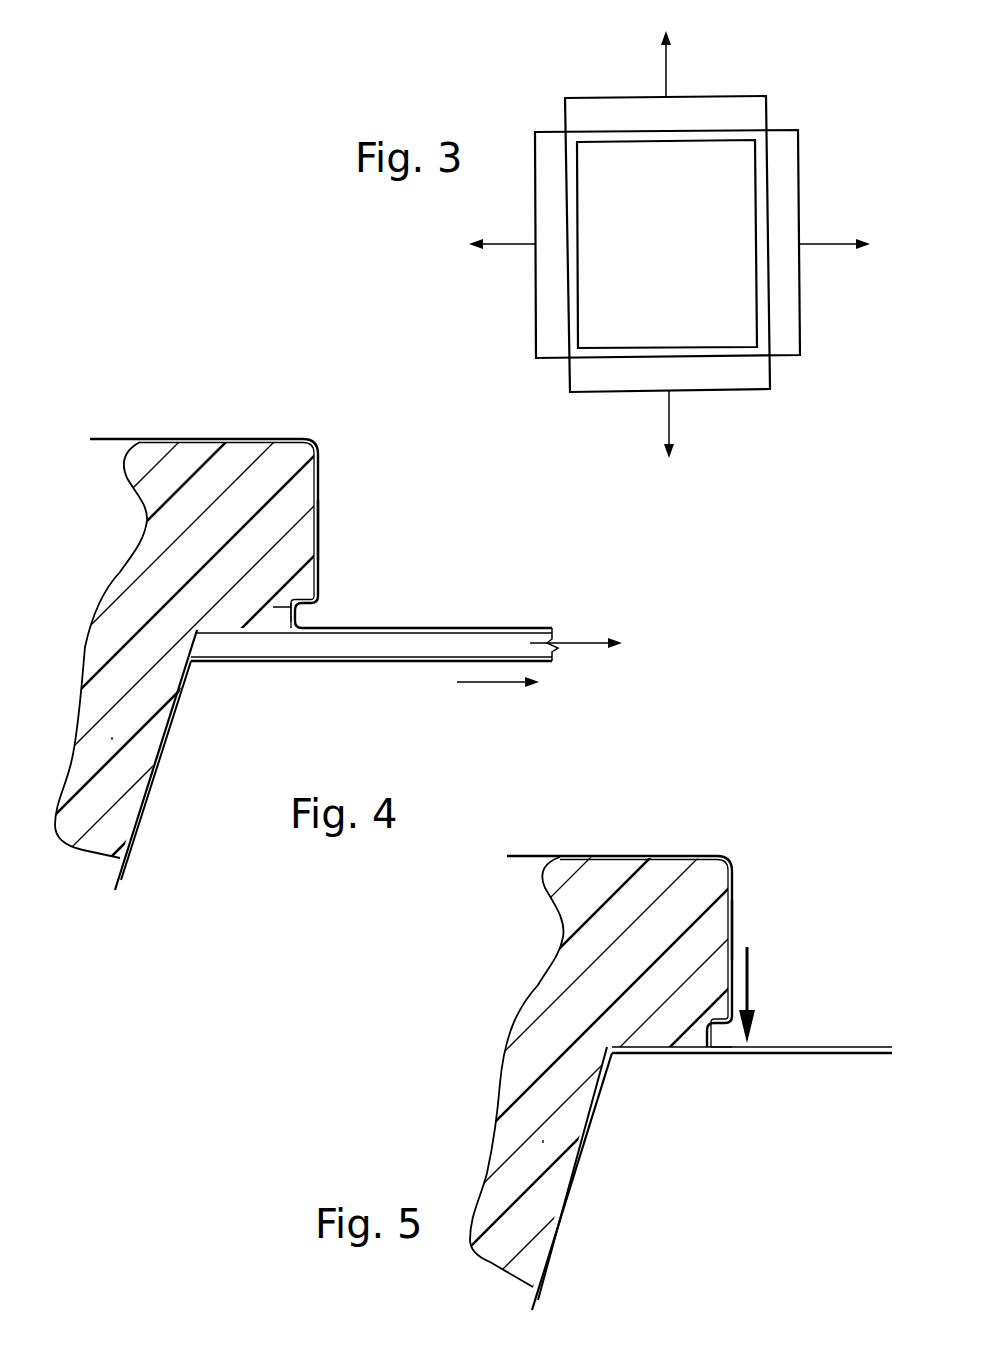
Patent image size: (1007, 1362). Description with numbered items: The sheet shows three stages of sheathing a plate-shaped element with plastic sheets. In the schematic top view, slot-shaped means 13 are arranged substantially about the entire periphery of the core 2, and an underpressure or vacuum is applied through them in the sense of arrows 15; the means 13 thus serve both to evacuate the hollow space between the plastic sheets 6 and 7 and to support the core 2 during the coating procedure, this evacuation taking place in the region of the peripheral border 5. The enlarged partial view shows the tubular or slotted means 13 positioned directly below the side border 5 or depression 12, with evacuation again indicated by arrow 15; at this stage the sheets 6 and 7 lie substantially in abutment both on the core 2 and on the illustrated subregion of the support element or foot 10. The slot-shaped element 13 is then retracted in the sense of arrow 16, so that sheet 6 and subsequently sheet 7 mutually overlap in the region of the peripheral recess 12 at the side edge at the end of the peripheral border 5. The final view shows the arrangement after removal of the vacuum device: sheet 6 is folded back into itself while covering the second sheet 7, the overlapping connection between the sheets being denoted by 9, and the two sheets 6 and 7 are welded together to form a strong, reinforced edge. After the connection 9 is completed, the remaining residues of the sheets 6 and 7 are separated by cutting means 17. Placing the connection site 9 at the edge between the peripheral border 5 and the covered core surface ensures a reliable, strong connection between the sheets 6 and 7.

In FIG. 4, the core 2 is at (170, 487).
In FIG. 5, the core 2 is at (597, 903).
In FIG. 4, the peripheral border 5 is at (319, 525).
In FIG. 5, the peripheral border 5 is at (733, 908).
In FIG. 4, the plastic sheet 6 is at (195, 437).
In FIG. 5, the plastic sheet 6 is at (680, 855).
In FIG. 4, the plastic sheet 7 is at (118, 877).
In FIG. 5, the plastic sheet 7 is at (835, 1057).
In FIG. 5, the connection 9 is at (730, 1049).
In FIG. 4, the support element or foot 10 is at (112, 737).
In FIG. 5, the support element or foot 10 is at (543, 1140).
In FIG. 4, the depression or peripheral recess 12 is at (273, 607).
In FIG. 3, the slot-shaped means 13 is at (550, 159).
In FIG. 4, the slot-shaped means 13 is at (350, 642).
In FIG. 3, the arrows 15 is at (666, 77).
In FIG. 4, the arrows 15 is at (577, 640).
In FIG. 4, the arrow 16 is at (498, 696).
In FIG. 5, the cutting means 17 is at (750, 977).